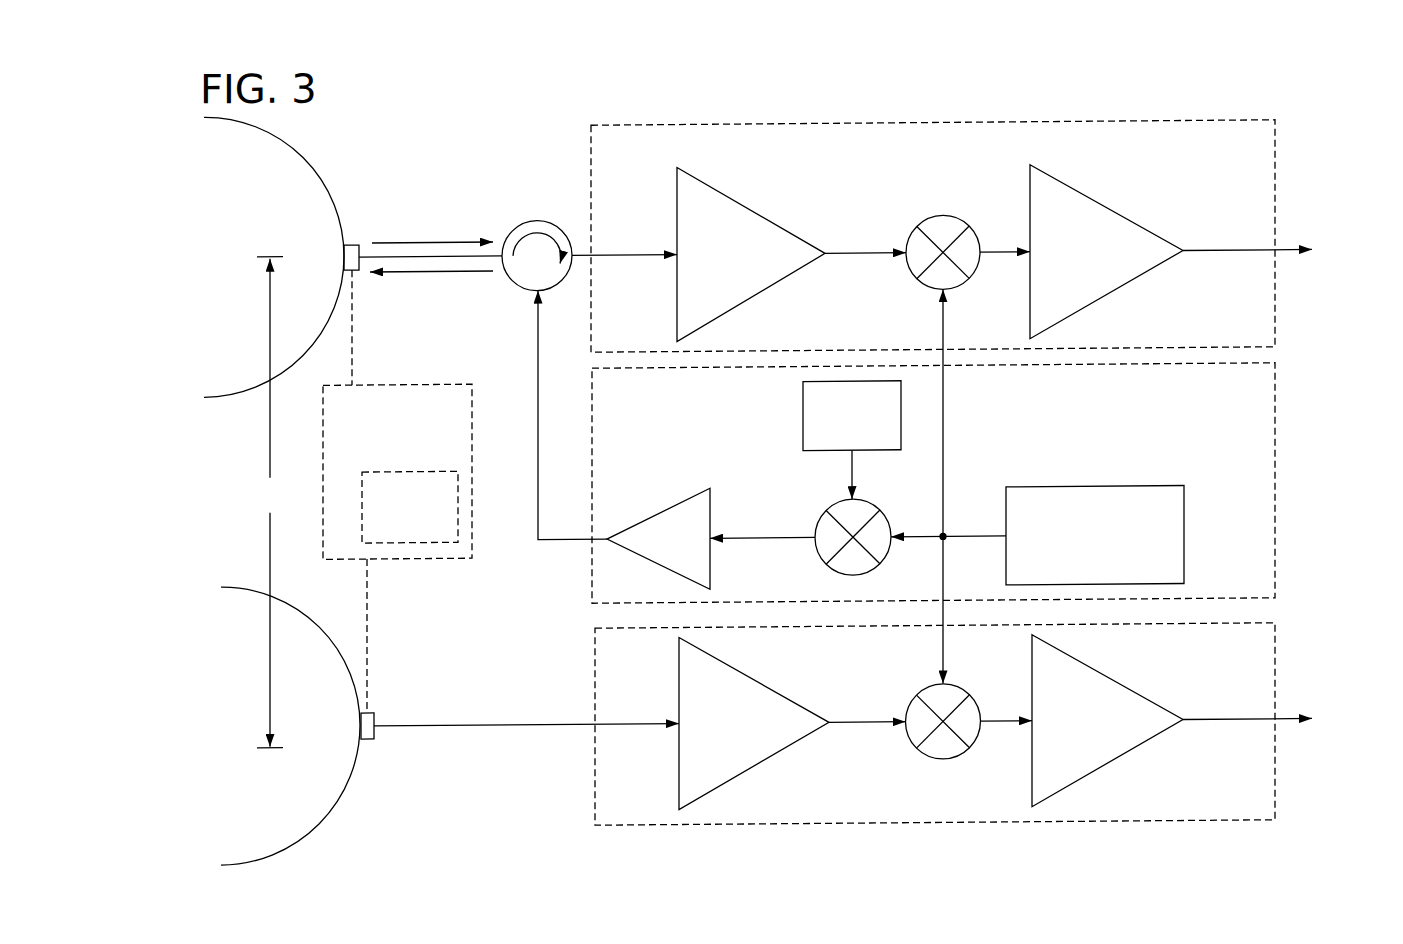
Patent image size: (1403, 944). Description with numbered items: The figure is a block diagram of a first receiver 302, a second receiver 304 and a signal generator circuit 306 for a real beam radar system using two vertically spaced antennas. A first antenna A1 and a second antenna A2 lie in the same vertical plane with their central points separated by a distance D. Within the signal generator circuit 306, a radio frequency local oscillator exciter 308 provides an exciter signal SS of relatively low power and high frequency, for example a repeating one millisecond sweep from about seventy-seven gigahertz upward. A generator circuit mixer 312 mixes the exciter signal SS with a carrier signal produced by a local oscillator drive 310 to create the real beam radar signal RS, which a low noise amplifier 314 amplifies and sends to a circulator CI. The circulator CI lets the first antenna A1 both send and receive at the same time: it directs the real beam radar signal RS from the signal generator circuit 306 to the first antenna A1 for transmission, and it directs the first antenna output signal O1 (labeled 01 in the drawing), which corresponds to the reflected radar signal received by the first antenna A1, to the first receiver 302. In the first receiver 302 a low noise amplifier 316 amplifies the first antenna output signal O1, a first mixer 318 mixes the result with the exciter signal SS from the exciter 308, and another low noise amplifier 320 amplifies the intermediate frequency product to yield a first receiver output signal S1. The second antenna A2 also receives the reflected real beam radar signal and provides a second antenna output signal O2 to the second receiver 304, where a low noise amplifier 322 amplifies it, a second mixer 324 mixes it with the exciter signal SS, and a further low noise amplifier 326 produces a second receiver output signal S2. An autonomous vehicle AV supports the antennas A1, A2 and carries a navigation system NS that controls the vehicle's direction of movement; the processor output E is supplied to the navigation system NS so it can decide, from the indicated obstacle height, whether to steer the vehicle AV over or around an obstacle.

The first receiver 302 is at (873, 124).
The second receiver 304 is at (873, 828).
The signal generator circuit 306 is at (1277, 463).
The radio frequency local oscillator exciter 308 is at (1095, 534).
The local oscillator drive 310 is at (852, 416).
The generator circuit mixer 312 is at (826, 566).
The low noise amplifier 314 is at (658, 539).
The low noise amplifier 316 is at (751, 253).
The first mixer 318 is at (943, 218).
The low noise amplifier 320 is at (1106, 250).
The low noise amplifier 322 is at (754, 722).
The second mixer 324 is at (943, 762).
The low noise amplifier 326 is at (1107, 719).
The first antenna A1 is at (281, 256).
The second antenna A2 is at (297, 725).
The distance D is at (270, 502).
The circulator CI is at (537, 220).
The autonomous vehicle AV is at (397, 471).
The navigation system NS is at (410, 507).
The output E is at (410, 543).
The first antenna output signal 01 is at (430, 240).
The real beam radar signal RS is at (435, 271).
The first antenna output signal O1 is at (620, 253).
The second antenna output signal O2 is at (630, 722).
The first receiver output signal S1 is at (1245, 252).
The second receiver output signal S2 is at (1245, 722).
The exciter signal SS is at (973, 539).